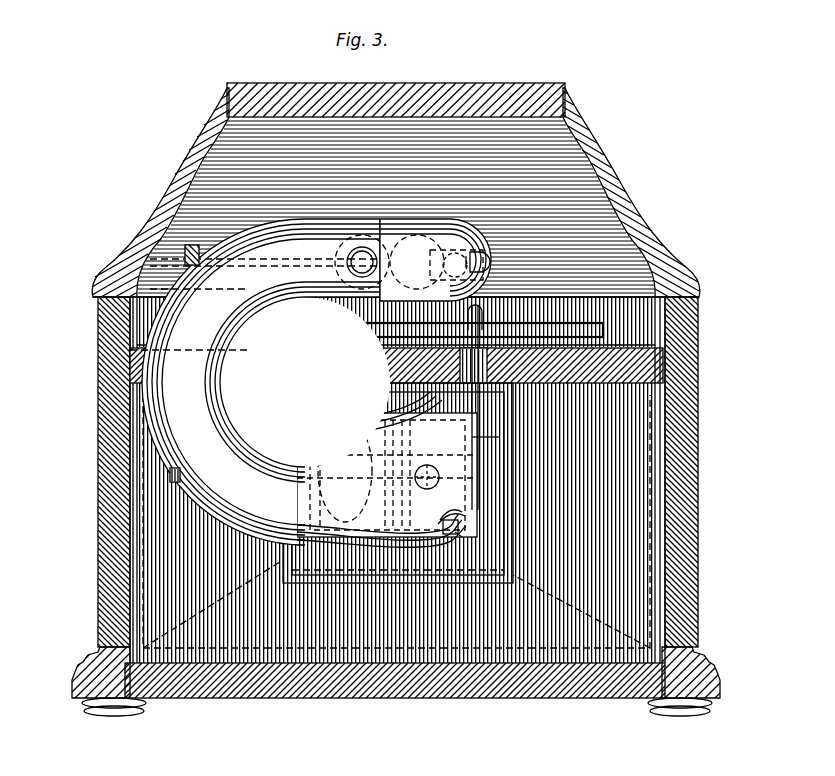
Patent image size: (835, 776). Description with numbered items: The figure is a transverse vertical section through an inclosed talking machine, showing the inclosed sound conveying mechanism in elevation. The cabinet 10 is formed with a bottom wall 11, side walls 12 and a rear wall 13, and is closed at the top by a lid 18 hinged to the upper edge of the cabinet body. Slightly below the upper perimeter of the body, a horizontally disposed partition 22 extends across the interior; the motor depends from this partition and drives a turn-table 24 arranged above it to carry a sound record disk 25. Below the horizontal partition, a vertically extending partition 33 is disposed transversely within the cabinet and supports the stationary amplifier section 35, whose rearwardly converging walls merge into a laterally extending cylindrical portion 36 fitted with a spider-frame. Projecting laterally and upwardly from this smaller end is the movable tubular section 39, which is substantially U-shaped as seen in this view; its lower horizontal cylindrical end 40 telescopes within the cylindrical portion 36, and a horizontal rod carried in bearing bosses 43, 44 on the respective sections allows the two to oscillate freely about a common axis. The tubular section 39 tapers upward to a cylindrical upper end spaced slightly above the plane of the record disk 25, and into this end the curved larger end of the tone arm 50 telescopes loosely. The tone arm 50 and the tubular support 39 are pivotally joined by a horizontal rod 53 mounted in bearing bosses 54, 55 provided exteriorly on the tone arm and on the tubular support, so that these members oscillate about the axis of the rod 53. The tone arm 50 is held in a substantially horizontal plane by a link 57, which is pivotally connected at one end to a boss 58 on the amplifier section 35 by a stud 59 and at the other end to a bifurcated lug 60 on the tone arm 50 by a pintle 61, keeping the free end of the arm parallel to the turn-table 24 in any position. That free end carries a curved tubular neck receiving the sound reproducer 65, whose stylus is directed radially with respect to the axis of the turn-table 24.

The cabinet 10 is at (97, 433).
The bottom wall 11 is at (345, 690).
The side walls 12 is at (97, 546).
The rear wall 13 is at (603, 330).
The lid 18 is at (520, 95).
The horizontally disposed partition 22 is at (660, 372).
The turn-table 24 is at (633, 313).
The sound record disk 25 is at (670, 242).
The vertically extending partition 33 is at (445, 483).
The stationary amplifier section 35 is at (356, 419).
The cylindrical portion 36 is at (300, 490).
The movable tubular section 39 is at (156, 365).
The lower horizontal cylindrical end 40 is at (278, 462).
The bearing boss 43 is at (440, 478).
The bearing boss 44 is at (175, 480).
The tone arm 50 is at (455, 220).
The horizontal rod 53 is at (305, 382).
The bearing boss 54 is at (190, 252).
The bearing boss 55 is at (480, 262).
The link 57 is at (500, 437).
The boss 58 is at (455, 532).
The stud 59 is at (460, 520).
The bifurcated lug 60 is at (483, 316).
The pintle 61 is at (483, 320).
The sound reproducer 65 is at (345, 238).